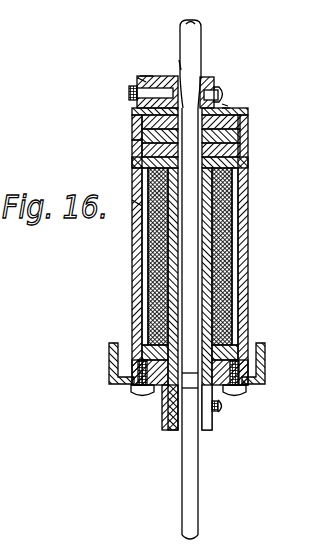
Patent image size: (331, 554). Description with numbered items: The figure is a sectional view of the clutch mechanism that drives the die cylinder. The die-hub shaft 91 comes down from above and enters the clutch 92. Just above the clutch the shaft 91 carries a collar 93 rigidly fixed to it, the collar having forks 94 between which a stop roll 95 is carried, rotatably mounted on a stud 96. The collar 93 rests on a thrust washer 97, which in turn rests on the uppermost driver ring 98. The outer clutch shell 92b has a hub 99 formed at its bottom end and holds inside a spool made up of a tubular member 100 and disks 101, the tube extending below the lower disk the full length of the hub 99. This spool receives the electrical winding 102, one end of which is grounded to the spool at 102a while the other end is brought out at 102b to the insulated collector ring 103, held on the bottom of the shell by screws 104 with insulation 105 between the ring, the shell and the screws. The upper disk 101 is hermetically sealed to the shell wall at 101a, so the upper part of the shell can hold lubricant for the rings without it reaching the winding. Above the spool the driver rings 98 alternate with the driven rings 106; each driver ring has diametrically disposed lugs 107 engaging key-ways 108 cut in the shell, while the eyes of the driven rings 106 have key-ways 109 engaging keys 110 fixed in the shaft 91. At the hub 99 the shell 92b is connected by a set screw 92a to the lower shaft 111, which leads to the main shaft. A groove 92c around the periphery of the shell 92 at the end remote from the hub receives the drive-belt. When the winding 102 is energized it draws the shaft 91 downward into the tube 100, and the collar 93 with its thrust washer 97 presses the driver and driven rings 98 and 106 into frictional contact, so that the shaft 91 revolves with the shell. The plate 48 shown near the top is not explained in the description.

The plate 48 is at (251, 99).
The shaft 91 is at (193, 50).
The clutch 92 is at (243, 296).
The set screw 92a is at (222, 408).
The clutch shell 92b is at (248, 262).
The groove 92c is at (132, 168).
The collar 93 is at (166, 76).
The forks 94 is at (153, 76).
The stop roll 95 is at (130, 93).
The stud 96 is at (146, 80).
The thrust washer 97 is at (226, 105).
The driver rings 98 is at (136, 128).
The hub 99 is at (262, 355).
The tubular member 100 is at (136, 206).
The disks 101 is at (250, 167).
The hermetic seal 101a is at (140, 157).
The electrical winding 102 is at (233, 232).
The grounded end of winding 102a is at (248, 192).
The lead end of winding 102b is at (246, 350).
The collector ring 103 is at (109, 356).
The screws 104 is at (140, 393).
The insulation 105 is at (248, 386).
The driven rings 106 is at (240, 146).
The lugs 107 is at (240, 134).
The key-ways 108 is at (245, 122).
The key-ways 109 is at (181, 65).
The keys 110 is at (203, 82).
The shaft 111 is at (188, 491).